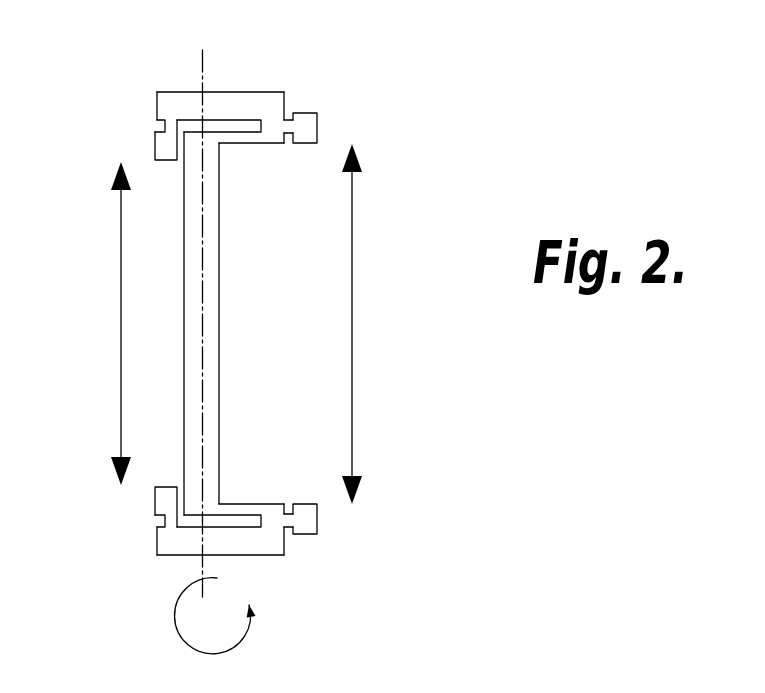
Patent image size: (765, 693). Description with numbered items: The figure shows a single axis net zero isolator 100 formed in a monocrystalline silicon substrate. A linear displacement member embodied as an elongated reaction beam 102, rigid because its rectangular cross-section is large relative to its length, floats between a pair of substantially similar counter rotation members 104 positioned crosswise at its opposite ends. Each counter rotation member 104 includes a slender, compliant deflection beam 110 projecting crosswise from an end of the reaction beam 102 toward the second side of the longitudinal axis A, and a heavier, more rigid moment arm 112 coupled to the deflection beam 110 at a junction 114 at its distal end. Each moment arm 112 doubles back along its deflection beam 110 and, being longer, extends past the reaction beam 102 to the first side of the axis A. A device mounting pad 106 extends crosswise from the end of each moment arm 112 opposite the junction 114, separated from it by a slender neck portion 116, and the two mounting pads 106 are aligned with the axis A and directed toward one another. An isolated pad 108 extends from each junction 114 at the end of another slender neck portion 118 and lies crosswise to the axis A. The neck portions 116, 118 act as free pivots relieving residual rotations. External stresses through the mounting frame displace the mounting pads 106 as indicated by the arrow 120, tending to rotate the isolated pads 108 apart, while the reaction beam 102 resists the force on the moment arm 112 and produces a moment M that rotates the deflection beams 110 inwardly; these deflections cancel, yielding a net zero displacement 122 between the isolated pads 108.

The single axis net zero isolator 100 is at (448, 195).
The reaction beam 102 is at (220, 282).
The counter rotation member 104 is at (256, 82).
The device mounting pad 106 is at (155, 148).
The isolated pad 108 is at (318, 127).
The deflection beam 110 is at (243, 144).
The moment arm 112 is at (177, 92).
The junction 114 is at (272, 137).
The neck portion 116 is at (147, 123).
The neck portion 118 is at (298, 102).
The displacement arrow 120 is at (120, 310).
The second displacement arrow 122 is at (353, 292).
The longitudinal axis A is at (203, 72).
The moment M is at (215, 616).